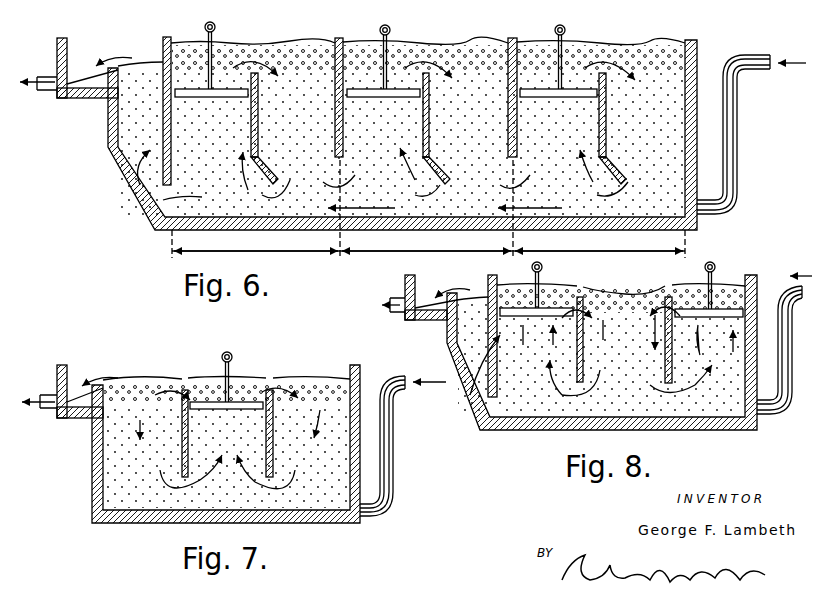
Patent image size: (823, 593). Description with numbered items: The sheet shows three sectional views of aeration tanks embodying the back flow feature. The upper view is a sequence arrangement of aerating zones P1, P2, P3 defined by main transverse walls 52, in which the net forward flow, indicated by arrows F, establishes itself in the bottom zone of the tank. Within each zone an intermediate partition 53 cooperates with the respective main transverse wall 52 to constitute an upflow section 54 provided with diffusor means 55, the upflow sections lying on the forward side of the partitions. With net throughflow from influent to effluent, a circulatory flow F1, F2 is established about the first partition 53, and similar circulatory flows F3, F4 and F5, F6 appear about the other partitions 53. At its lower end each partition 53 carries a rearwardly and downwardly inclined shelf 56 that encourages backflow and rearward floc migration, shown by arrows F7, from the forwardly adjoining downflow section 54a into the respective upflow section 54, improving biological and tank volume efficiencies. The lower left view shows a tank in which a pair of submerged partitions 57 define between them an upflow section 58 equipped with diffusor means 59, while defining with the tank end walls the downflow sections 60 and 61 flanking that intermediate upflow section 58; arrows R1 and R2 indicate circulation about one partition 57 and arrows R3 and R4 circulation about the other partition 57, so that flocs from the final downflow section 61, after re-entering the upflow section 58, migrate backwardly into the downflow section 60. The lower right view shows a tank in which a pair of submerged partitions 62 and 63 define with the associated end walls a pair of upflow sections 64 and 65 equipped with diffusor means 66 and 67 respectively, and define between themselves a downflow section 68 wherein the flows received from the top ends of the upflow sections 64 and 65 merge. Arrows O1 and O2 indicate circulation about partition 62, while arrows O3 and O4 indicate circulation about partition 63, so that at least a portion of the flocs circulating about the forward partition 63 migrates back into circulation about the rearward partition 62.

In FIG. 6, the main transverse wall 52 is at (338, 40).
In FIG. 6, the intermediate partition 53 is at (258, 113).
In FIG. 6, the upflow section 54 is at (220, 123).
In FIG. 6, the downflow section 54a is at (313, 115).
In FIG. 6, the diffusor means 55 is at (570, 88).
In FIG. 6, the inclined shelf 56 is at (269, 168).
In FIG. 7, the submerged partition 57 is at (183, 427).
In FIG. 7, the upflow section 58 is at (239, 445).
In FIG. 7, the diffusor means 59 is at (231, 395).
In FIG. 7, the downflow section 60 is at (334, 473).
In FIG. 7, the downflow section 61 is at (148, 473).
In FIG. 8, the submerged partition 62 is at (665, 340).
In FIG. 8, the submerged partition 63 is at (584, 340).
In FIG. 8, the upflow section 64 is at (729, 367).
In FIG. 8, the upflow section 65 is at (545, 367).
In FIG. 8, the diffusor means 66 is at (698, 306).
In FIG. 8, the diffusor means 67 is at (548, 303).
In FIG. 8, the downflow section 68 is at (638, 323).
In FIG. 6, the net forward flow arrows F is at (350, 179).
In FIG. 6, the circulatory flow arrow F1 is at (615, 60).
In FIG. 6, the circulatory flow arrow F2 is at (601, 176).
In FIG. 6, the circulatory flow arrow F3 is at (428, 58).
In FIG. 6, the circulatory flow arrow F4 is at (416, 175).
In FIG. 6, the circulatory flow arrow F5 is at (236, 68).
In FIG. 6, the circulatory flow arrow F6 is at (266, 185).
In FIG. 6, the backflow arrows F7 is at (420, 189).
In FIG. 6, the aeration zone P1 is at (599, 247).
In FIG. 6, the aeration zone P2 is at (426, 212).
In FIG. 6, the aeration zone P3 is at (256, 212).
In FIG. 7, the circulation arrow R1 is at (278, 385).
In FIG. 7, the circulation arrow R2 is at (283, 488).
In FIG. 7, the circulation arrow R3 is at (182, 390).
In FIG. 7, the circulation arrow R4 is at (176, 488).
In FIG. 8, the circulation arrow O1 is at (664, 292).
In FIG. 8, the circulation arrow O2 is at (692, 392).
In FIG. 8, the circulation arrow O3 is at (590, 298).
In FIG. 8, the circulation arrow O4 is at (535, 376).